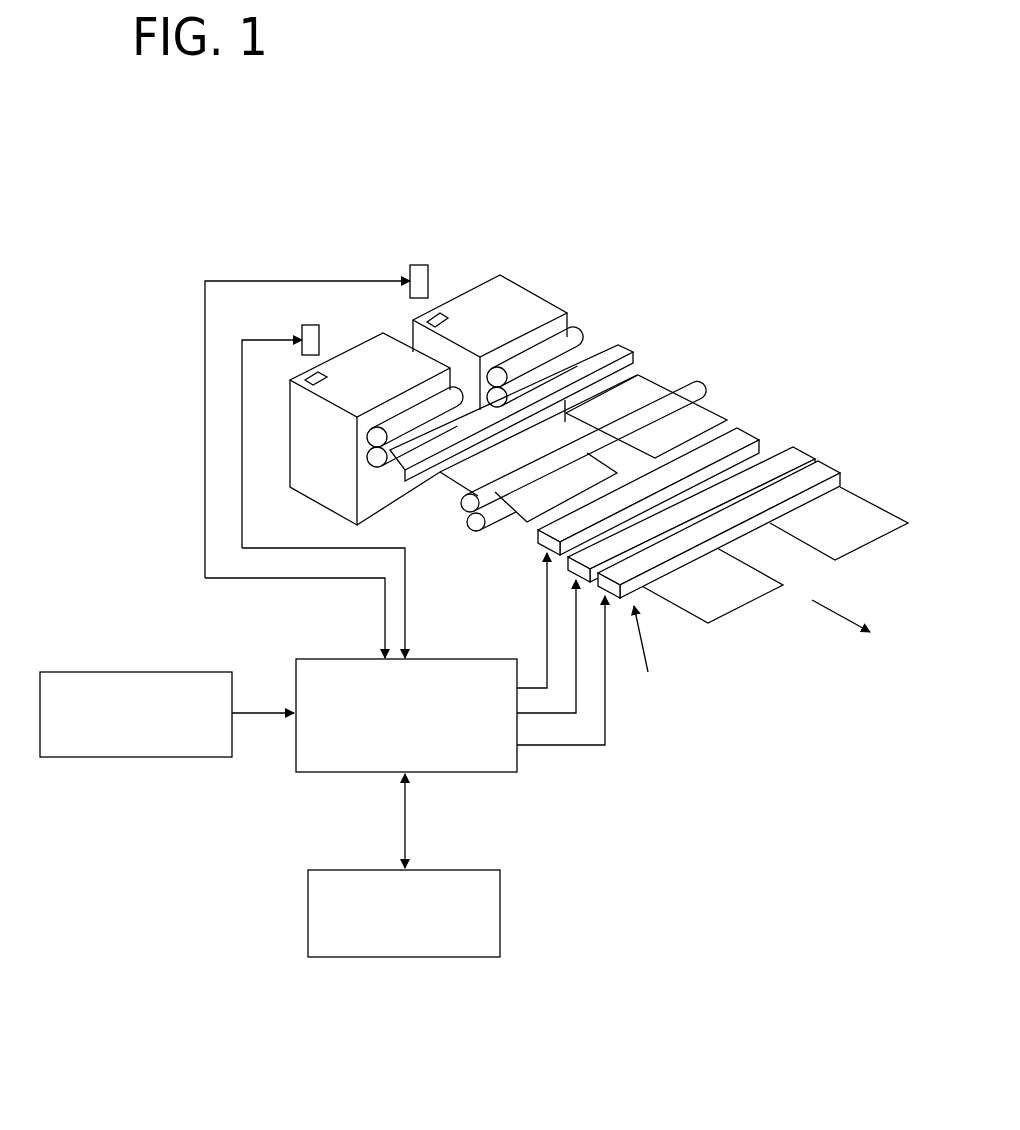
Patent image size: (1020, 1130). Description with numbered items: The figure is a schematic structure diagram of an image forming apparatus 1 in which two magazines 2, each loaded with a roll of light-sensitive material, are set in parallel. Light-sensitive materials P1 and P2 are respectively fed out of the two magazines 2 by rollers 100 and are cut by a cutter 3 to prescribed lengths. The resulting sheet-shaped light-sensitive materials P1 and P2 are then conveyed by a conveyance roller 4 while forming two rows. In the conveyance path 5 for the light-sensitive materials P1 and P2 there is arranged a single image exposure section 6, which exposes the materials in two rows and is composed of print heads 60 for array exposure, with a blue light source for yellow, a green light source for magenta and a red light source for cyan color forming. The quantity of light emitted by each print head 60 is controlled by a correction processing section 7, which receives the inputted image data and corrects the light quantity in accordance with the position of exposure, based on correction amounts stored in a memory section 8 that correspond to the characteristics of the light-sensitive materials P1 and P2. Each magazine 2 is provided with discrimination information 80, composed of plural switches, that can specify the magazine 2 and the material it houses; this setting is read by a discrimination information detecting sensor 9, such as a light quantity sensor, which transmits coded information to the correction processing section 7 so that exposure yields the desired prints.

The image forming apparatus 1 is at (331, 192).
The magazine 2 is at (470, 297).
The cutter 3 is at (628, 345).
The conveyance roller 4 is at (690, 383).
The conveyance path 5 is at (752, 654).
The image exposure section 6 is at (870, 345).
The correction processing section 7 is at (440, 660).
The memory section 8 is at (442, 868).
The discrimination information detecting sensor 9 is at (415, 264).
The print head 60 is at (772, 427).
The discrimination information 80 is at (427, 316).
The roller 100 is at (528, 363).
The light-sensitive material P1 is at (515, 507).
The light-sensitive material P2 is at (583, 343).